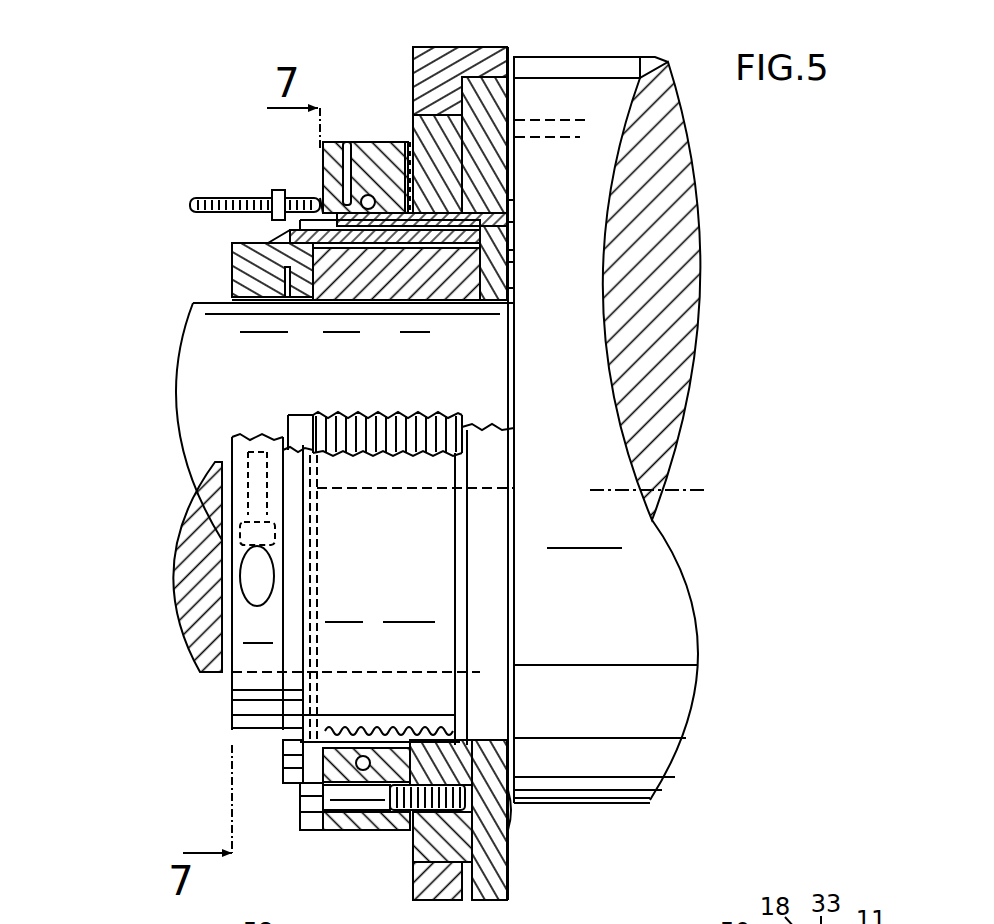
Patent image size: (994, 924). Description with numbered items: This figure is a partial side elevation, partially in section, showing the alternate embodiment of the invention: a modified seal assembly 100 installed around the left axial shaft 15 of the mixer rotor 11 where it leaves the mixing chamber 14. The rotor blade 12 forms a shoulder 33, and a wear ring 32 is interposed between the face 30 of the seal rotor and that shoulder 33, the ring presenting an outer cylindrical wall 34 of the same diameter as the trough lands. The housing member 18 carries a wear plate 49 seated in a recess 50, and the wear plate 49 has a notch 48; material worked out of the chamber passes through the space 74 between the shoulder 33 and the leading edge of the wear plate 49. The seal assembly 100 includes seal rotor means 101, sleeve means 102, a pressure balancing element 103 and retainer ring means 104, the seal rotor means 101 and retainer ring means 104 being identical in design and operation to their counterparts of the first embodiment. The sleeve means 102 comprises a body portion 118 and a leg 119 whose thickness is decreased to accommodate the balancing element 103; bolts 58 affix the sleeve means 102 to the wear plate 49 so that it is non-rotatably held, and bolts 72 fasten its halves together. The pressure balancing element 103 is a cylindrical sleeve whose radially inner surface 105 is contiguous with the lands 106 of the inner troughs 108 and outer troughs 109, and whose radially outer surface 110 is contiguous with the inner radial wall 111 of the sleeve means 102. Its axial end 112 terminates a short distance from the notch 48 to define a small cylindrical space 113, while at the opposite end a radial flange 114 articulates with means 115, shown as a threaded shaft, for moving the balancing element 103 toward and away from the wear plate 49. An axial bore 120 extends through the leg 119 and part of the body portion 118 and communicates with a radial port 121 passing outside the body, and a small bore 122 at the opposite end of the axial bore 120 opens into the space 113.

The rotor 11 is at (665, 515).
The rotor blade 12 is at (650, 60).
The mixing chamber 14 is at (657, 848).
The left axial shaft 15 is at (186, 341).
The housing member 18 is at (468, 57).
The rotor face 30 is at (503, 290).
The wear ring 32 is at (505, 262).
The shoulder 33 is at (509, 820).
The outer cylindrical wall 34 is at (512, 254).
The notch 48 is at (512, 208).
The wear plate 49 is at (518, 112).
The recess 50 is at (570, 76).
The bolt 58 is at (351, 832).
The bolt 72 is at (305, 448).
The space 74 is at (520, 134).
The seal assembly 100 is at (258, 114).
The seal rotor means 101 is at (382, 310).
The sleeve means 102 is at (385, 138).
The pressure balancing element 103 is at (281, 231).
The retainer ring means 104 is at (230, 276).
The radially inner surface 105 is at (328, 250).
The lands 106 is at (348, 216).
The inner troughs 108 is at (470, 206).
The outer troughs 109 is at (347, 216).
The radially outer surface 110 is at (330, 228).
The inner radial wall 111 is at (398, 252).
The axial end 112 is at (480, 236).
The cylindrical space 113 is at (515, 238).
The radial flange 114 is at (300, 192).
The means for movement 115 is at (190, 205).
The body portion 118 is at (365, 140).
The leg 119 is at (470, 190).
The axial bore 120 is at (405, 142).
The radial port 121 is at (347, 205).
The small bore 122 is at (515, 222).